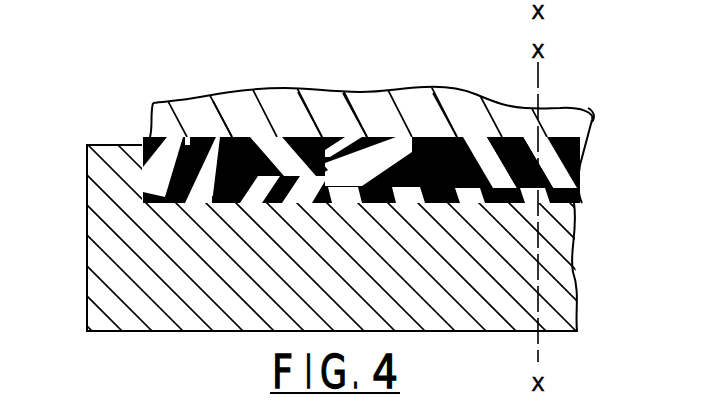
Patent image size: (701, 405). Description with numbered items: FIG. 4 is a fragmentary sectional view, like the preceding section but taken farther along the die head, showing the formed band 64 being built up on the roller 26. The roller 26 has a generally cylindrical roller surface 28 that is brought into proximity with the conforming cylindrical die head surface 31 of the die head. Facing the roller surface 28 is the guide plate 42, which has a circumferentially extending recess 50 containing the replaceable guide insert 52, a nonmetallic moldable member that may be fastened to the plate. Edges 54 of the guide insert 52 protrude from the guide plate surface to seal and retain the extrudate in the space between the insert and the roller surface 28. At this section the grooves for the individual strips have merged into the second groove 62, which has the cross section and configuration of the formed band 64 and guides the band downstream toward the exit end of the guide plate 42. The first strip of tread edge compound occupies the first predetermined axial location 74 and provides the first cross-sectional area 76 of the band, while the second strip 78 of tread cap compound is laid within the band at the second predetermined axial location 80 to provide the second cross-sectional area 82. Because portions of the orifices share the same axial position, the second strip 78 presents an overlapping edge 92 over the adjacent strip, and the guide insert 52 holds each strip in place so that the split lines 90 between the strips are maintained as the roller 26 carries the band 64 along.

The roller 26 is at (457, 110).
The cylindrical roller surface 28 is at (503, 147).
The cylindrical die head surface 31 is at (96, 145).
The guide plate 42 is at (570, 267).
The circumferentially extending recess 50 is at (142, 200).
The replaceable guide insert 52 is at (140, 162).
The edges of the guide insert 54 is at (158, 103).
The second groove 62 is at (556, 190).
The formed band 64 is at (563, 150).
The first predetermined axial location 74 is at (292, 137).
The first cross-sectional area 76 is at (234, 132).
The second strip 78 is at (567, 124).
The second predetermined axial location 80 is at (497, 148).
The second cross-sectional area 82 is at (457, 152).
The split lines 90 is at (366, 154).
The overlapping edge 92 is at (316, 180).